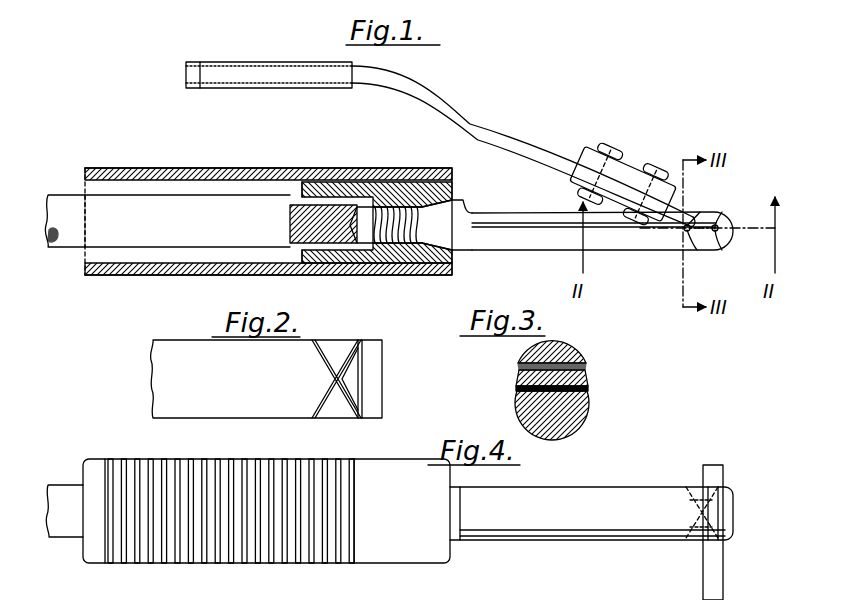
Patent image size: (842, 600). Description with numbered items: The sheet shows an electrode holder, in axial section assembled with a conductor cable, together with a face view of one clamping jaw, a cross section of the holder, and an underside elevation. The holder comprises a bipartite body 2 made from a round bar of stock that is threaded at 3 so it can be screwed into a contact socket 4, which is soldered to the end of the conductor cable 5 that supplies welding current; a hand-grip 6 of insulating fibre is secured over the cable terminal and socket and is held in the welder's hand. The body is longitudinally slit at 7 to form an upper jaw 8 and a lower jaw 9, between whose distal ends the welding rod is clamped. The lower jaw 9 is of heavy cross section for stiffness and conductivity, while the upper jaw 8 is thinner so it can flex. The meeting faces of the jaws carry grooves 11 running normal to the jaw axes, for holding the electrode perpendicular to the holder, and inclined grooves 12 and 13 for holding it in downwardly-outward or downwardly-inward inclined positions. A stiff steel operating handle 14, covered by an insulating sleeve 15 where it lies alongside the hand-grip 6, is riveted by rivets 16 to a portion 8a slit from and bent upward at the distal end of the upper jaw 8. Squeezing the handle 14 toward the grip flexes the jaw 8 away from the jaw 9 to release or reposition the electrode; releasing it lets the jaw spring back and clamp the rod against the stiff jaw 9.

In FIG. 1, the bipartite body 2 is at (506, 258).
In FIG. 4, the bipartite body 2 is at (605, 545).
In FIG. 1, the threaded portion 3 is at (396, 208).
In FIG. 1, the contact socket 4 is at (386, 245).
In FIG. 1, the conductor cable 5 is at (50, 240).
In FIG. 4, the conductor cable 5 is at (66, 490).
In FIG. 1, the hand-grip 6 is at (152, 268).
In FIG. 4, the hand-grip 6 is at (97, 466).
In FIG. 1, the slit 7 is at (515, 222).
In FIG. 3, the slit 7 is at (590, 388).
In FIG. 1, the upper jaw 8 is at (543, 225).
In FIG. 3, the upper jaw 8 is at (586, 378).
In FIG. 1, the portion 8a is at (622, 178).
In FIG. 3, the portion 8a is at (572, 354).
In FIG. 1, the lower jaw 9 is at (633, 250).
In FIG. 2, the lower jaw 9 is at (160, 370).
In FIG. 3, the lower jaw 9 is at (575, 408).
In FIG. 4, the lower jaw 9 is at (588, 495).
In FIG. 1, the grooves 11 is at (722, 214).
In FIG. 2, the grooves 11 is at (362, 375).
In FIG. 4, the grooves 11 is at (724, 508).
In FIG. 1, the inclined grooves 12 is at (694, 216).
In FIG. 2, the inclined grooves 12 is at (338, 346).
In FIG. 4, the inclined grooves 12 is at (686, 487).
In FIG. 2, the inclined grooves 13 is at (330, 408).
In FIG. 4, the inclined grooves 13 is at (700, 525).
In FIG. 1, the operating handle 14 is at (466, 104).
In FIG. 1, the sleeve 15 is at (268, 64).
In FIG. 1, the rivets 16 is at (604, 156).